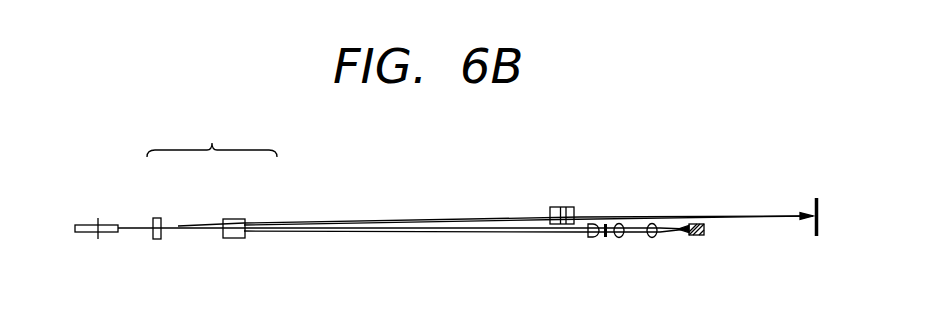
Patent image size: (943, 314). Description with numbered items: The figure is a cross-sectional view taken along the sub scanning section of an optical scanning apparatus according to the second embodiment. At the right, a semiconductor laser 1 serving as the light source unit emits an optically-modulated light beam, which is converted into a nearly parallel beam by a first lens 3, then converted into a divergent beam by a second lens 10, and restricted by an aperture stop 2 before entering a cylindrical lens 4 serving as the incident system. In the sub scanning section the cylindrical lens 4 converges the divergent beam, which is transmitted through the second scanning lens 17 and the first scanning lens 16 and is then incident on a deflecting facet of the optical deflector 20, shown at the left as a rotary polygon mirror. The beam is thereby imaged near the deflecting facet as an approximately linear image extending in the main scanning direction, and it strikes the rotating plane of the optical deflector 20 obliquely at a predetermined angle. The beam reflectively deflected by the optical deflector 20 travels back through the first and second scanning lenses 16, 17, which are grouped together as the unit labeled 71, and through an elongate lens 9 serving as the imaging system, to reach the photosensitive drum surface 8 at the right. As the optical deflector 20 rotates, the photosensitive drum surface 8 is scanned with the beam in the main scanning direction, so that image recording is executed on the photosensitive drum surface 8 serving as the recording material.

The optical deflector 20 is at (87, 224).
The illumination optical unit 71 is at (212, 135).
The first scanning lens 16 is at (158, 217).
The second scanning lens 17 is at (235, 218).
The elongate lens 9 is at (553, 207).
The photosensitive drum surface 8 is at (814, 201).
The cylindrical lens 4 is at (592, 240).
The aperture stop 2 is at (605, 240).
The second lens 10 is at (622, 240).
The first lens 3 is at (653, 240).
The semiconductor laser 1 is at (700, 237).